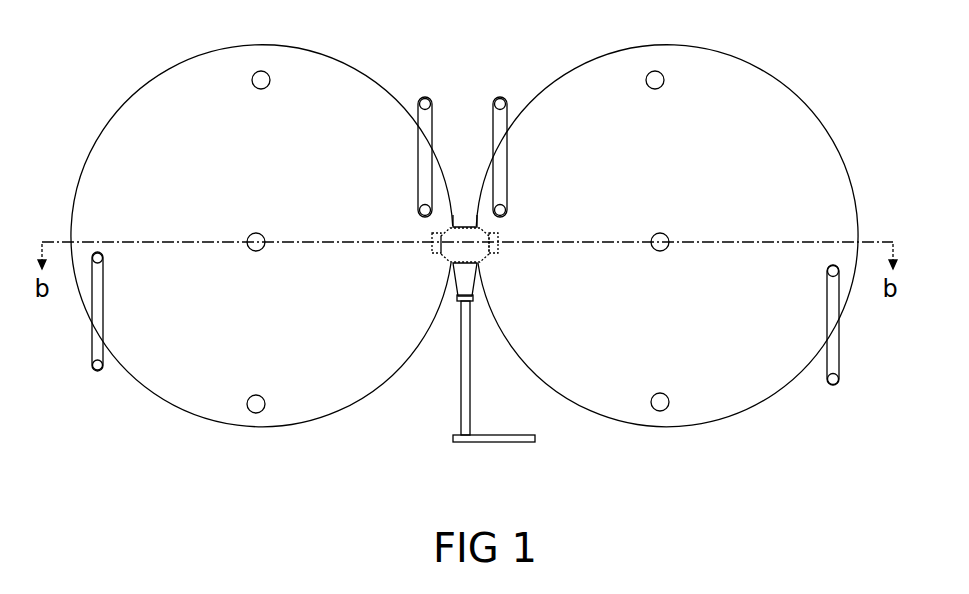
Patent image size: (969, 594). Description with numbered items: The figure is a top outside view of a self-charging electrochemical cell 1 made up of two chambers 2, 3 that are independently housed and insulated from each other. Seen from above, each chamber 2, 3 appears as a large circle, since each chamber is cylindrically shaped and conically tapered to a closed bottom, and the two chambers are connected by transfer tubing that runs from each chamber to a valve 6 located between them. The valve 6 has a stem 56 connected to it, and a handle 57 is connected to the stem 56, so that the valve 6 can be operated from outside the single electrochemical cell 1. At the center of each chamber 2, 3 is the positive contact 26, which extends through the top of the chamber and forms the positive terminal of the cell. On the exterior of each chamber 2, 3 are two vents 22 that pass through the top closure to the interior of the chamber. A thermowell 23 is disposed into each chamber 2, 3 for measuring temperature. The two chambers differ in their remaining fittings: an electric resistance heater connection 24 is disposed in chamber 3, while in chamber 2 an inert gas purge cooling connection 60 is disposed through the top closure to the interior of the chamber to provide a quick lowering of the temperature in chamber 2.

The self-charging electrochemical cell 1 is at (525, 48).
The chamber 2 is at (683, 43).
The chamber 3 is at (145, 85).
The valve 6 is at (458, 298).
The vents 22 is at (420, 186).
The thermowell 23 is at (250, 80).
The electric resistance heater connection 24 is at (258, 392).
The positive contact 26 is at (245, 242).
The stem 56 is at (458, 378).
The handle 57 is at (513, 447).
The inert gas purge cooling connection 60 is at (665, 390).